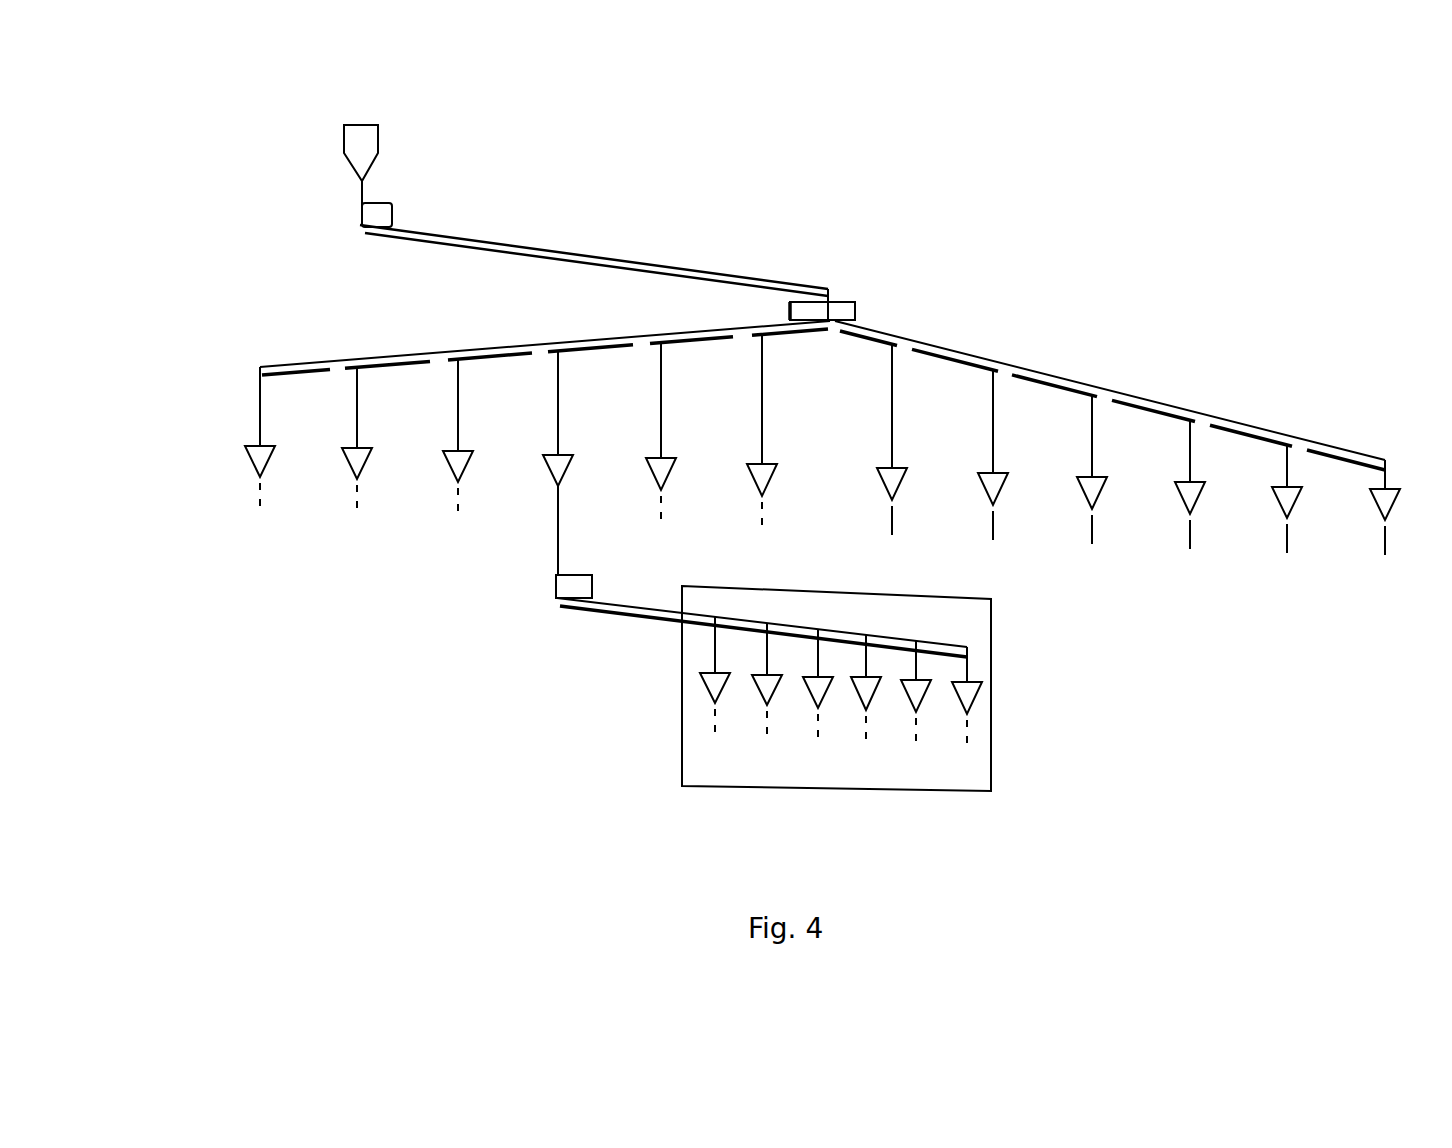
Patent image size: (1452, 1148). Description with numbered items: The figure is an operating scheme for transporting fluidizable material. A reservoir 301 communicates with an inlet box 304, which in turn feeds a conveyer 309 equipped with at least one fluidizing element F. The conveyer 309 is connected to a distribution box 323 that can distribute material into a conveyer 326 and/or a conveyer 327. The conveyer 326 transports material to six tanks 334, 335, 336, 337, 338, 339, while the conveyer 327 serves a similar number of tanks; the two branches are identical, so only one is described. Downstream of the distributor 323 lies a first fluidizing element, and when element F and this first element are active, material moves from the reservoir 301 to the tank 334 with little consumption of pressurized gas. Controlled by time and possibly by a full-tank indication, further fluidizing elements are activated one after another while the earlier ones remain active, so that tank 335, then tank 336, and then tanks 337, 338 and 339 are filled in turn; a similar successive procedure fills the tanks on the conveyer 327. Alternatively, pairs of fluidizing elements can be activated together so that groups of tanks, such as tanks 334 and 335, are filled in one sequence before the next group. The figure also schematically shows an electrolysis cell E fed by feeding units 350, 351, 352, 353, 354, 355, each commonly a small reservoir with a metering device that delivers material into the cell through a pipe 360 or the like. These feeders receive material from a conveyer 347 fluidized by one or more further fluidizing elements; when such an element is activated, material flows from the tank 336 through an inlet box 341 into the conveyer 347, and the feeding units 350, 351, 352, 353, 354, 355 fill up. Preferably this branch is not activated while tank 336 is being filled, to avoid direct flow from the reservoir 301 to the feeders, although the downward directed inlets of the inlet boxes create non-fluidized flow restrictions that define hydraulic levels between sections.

The reservoir 301 is at (365, 152).
The inlet box 304 is at (392, 215).
The conveyer 309 is at (573, 252).
The distribution box 323 is at (855, 305).
The conveyer 326 is at (567, 342).
The conveyer 327 is at (1038, 370).
The tank 334 is at (762, 478).
The tank 335 is at (660, 470).
The tank 336 is at (555, 473).
The tank 337 is at (457, 470).
The tank 338 is at (360, 458).
The tank 339 is at (260, 455).
The inlet box 341 is at (556, 596).
The conveyer 347 is at (637, 618).
The feeding unit 350 is at (705, 683).
The feeding unit 351 is at (764, 690).
The feeding unit 352 is at (818, 693).
The feeding unit 353 is at (877, 687).
The feeding unit 354 is at (923, 692).
The feeding unit 355 is at (980, 690).
The pipe 360 is at (712, 738).